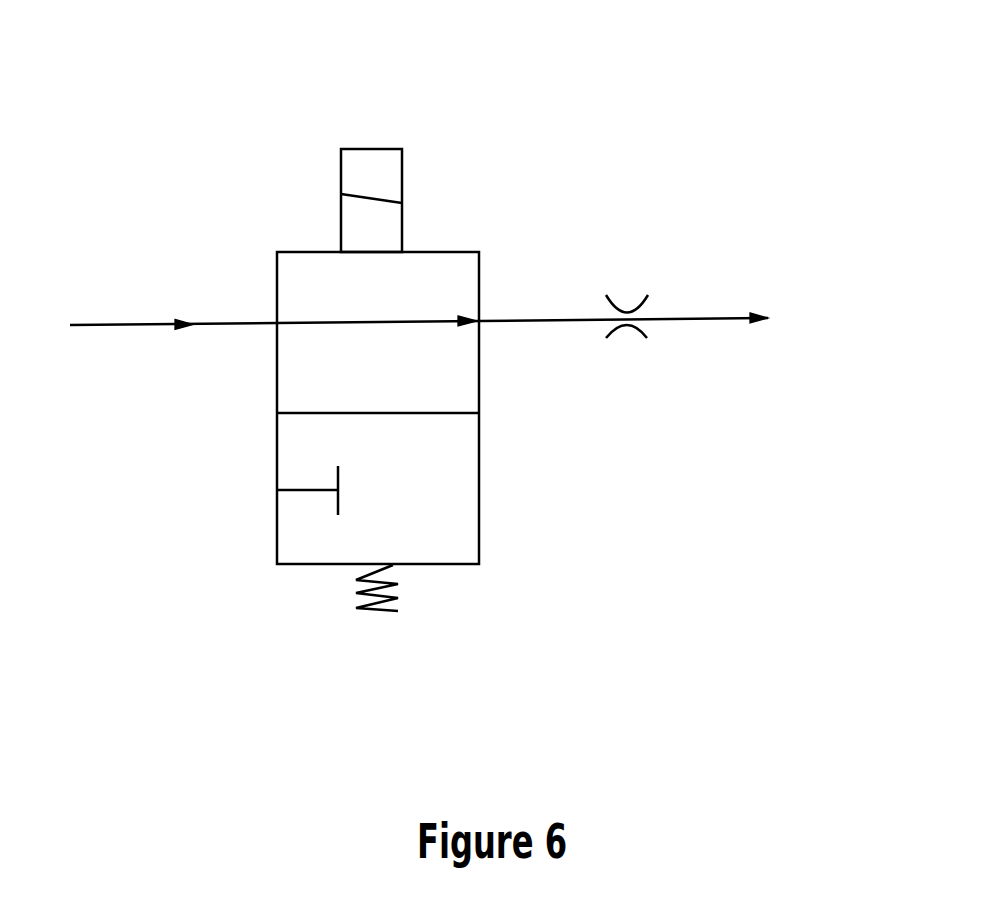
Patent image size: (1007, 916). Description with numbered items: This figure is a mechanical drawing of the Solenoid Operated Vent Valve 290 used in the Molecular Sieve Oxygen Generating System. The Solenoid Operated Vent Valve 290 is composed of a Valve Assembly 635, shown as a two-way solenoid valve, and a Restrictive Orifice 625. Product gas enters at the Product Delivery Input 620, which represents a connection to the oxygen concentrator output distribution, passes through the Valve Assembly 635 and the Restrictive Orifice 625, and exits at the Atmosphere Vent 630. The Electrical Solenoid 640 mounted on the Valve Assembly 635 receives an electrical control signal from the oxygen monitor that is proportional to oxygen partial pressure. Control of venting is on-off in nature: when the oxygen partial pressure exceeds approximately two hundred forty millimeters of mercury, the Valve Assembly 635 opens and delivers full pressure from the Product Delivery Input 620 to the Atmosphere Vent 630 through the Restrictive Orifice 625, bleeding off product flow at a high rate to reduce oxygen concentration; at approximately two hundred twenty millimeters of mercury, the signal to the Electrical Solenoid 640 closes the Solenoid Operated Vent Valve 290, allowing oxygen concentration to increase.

The Solenoid Operated Vent Valve 290 is at (688, 46).
The Product Delivery Input 620 is at (83, 282).
The Restrictive Orifice 625 is at (637, 291).
The Atmosphere Vent 630 is at (836, 283).
The Valve Assembly 635 is at (479, 505).
The Electrical Solenoid 640 is at (402, 190).